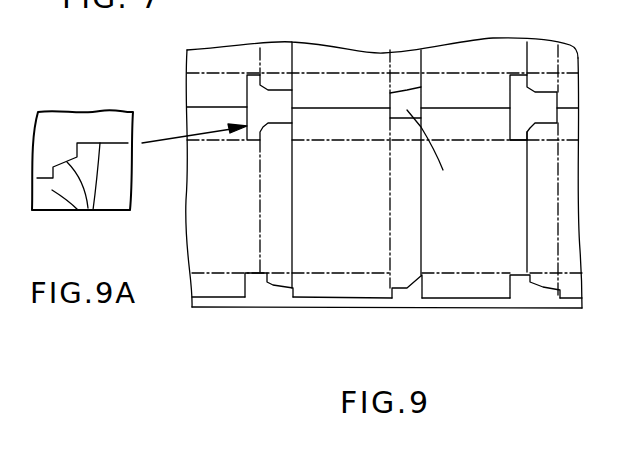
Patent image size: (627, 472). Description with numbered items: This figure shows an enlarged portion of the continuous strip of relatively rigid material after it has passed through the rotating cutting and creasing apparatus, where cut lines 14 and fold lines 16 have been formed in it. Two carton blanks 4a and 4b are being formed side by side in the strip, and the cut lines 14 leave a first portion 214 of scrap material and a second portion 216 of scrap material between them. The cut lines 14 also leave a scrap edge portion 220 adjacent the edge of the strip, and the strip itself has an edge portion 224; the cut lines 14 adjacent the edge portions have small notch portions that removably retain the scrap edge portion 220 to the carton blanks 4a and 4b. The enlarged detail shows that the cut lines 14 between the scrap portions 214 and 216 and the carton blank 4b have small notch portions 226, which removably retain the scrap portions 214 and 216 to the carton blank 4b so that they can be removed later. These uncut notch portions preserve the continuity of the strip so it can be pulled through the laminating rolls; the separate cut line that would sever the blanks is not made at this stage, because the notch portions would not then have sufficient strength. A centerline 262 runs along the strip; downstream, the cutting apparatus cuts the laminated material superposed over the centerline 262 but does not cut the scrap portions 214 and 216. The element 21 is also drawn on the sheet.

In FIG. 9, the carton blank 4a is at (203, 65).
In FIG. 9A, the carton blank 4b is at (50, 193).
In FIG. 9, the carton blank 4b is at (203, 262).
In FIG. 9, the cut lines 14 is at (442, 302).
In FIG. 9, the fold lines 16 is at (347, 272).
In FIG. 9, the tab 21 is at (520, 135).
In FIG. 9, the first portion of scrap material 214 is at (439, 154).
In FIG. 9A, the second portion of scrap material 216 is at (60, 127).
In FIG. 9, the second portion of scrap material 216 is at (247, 97).
In FIG. 9, the scrap edge portion 220 is at (267, 295).
In FIG. 9, the edge portion 224 is at (512, 308).
In FIG. 9A, the small notch portions 226 is at (82, 197).
In FIG. 9, the centerline 262 is at (570, 108).